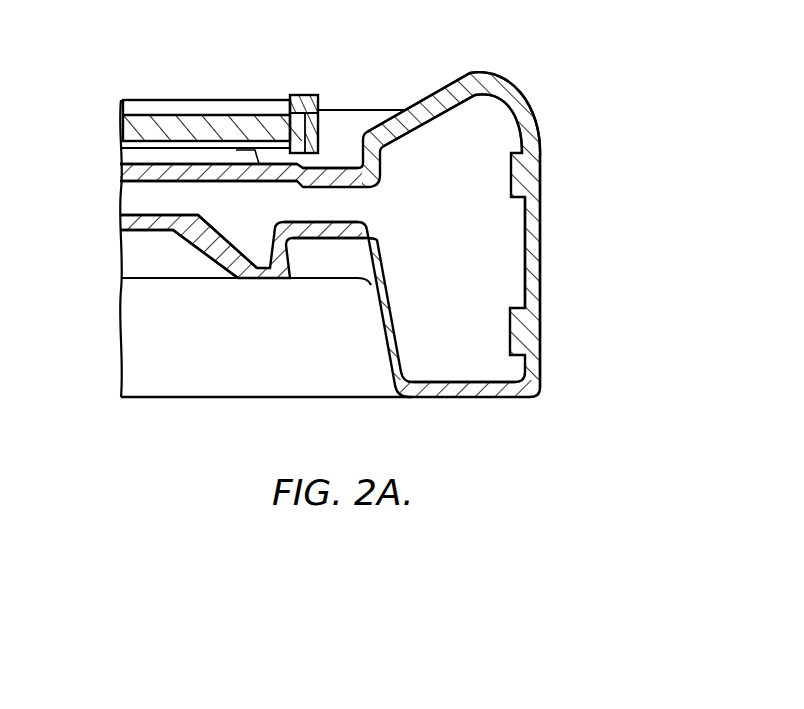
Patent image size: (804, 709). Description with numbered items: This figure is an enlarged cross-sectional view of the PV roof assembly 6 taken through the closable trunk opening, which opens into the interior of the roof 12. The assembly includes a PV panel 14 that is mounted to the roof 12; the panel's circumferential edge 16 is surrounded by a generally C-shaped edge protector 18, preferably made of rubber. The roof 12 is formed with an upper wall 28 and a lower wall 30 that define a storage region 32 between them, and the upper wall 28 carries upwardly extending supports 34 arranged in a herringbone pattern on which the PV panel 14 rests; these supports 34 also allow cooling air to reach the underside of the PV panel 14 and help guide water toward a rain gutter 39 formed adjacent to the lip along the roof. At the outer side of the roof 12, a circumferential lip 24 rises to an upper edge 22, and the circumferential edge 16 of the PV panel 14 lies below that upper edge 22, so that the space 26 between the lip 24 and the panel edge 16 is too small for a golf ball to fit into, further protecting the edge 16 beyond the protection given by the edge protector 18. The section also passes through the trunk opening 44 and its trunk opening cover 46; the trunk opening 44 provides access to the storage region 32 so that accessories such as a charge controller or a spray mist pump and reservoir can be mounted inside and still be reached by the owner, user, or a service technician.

The PV roof assembly 6 is at (597, 42).
The roof 12 is at (542, 111).
The PV panel 14 is at (197, 117).
The circumferential edge 16 is at (272, 110).
The edge protector 18 is at (307, 95).
The upper edge 22 is at (468, 72).
The circumferential lip 24 is at (515, 92).
The space 26 is at (337, 120).
The upper wall 28 is at (128, 172).
The lower wall 30 is at (128, 220).
The storage region 32 is at (377, 219).
The supports 34 is at (137, 157).
The rain gutter 39 is at (340, 157).
The trunk opening 44 is at (492, 268).
The trunk opening cover 46 is at (540, 223).